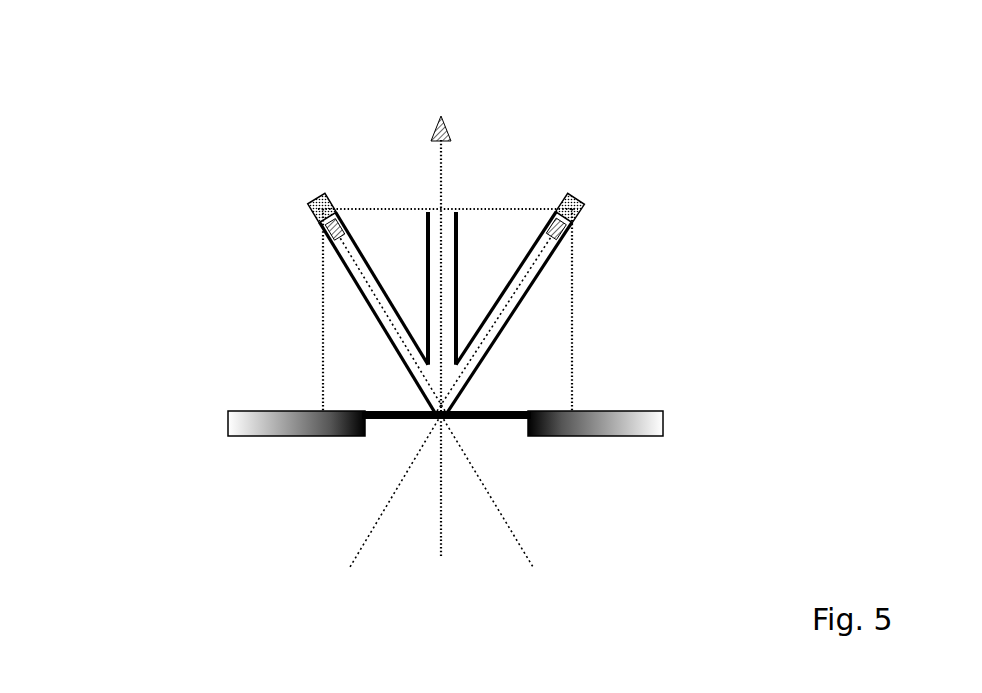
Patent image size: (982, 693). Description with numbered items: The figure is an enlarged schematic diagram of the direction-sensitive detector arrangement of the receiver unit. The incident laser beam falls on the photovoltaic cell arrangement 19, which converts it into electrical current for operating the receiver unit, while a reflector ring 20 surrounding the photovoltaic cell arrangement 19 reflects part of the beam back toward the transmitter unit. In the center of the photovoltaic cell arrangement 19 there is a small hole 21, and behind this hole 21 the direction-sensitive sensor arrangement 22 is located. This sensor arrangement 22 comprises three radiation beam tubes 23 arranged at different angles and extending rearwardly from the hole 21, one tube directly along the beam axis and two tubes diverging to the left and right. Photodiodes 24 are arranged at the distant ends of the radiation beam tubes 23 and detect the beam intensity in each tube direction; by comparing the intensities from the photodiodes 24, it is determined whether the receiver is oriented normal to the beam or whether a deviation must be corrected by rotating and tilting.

The photovoltaic cell arrangement 19 is at (393, 420).
The reflector ring 20 is at (262, 420).
The hole 21 is at (452, 422).
The direction-sensitive sensor arrangement 22 is at (537, 373).
The radiation beam tubes 23 is at (544, 250).
The photodiodes 24 is at (310, 203).